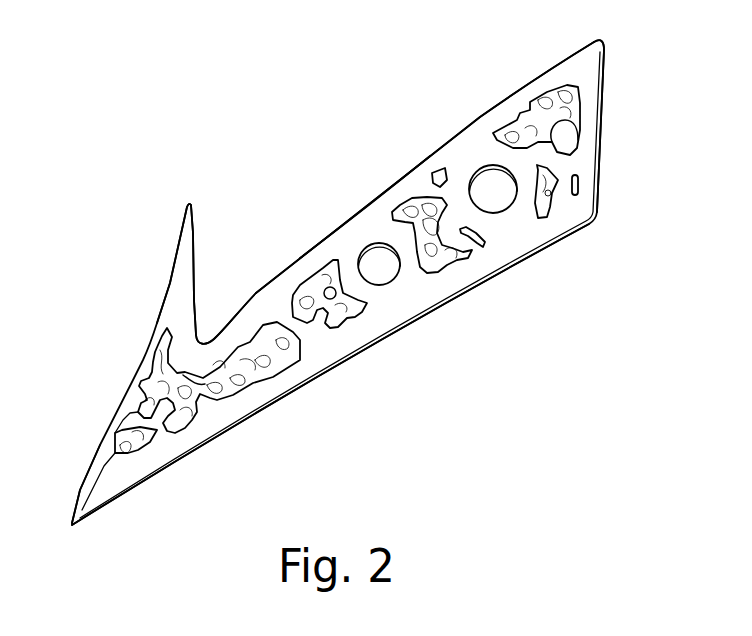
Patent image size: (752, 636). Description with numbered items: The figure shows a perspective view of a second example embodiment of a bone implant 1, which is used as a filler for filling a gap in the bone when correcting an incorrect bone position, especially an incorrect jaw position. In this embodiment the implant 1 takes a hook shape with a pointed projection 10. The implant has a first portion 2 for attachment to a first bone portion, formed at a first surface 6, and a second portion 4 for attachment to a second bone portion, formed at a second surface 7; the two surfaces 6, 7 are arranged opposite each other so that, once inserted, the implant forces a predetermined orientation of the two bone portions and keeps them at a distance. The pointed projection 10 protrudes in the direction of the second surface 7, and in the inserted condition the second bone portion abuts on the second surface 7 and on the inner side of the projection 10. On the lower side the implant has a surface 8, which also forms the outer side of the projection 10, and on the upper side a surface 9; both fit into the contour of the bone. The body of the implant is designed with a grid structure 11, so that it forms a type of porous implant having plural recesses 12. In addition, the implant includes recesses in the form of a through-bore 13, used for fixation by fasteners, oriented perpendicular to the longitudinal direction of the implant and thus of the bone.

The bone implant 1 is at (349, 282).
The first portion 2 is at (367, 352).
The second portion 4 is at (397, 177).
The first surface 6 is at (297, 400).
The second surface 7 is at (324, 232).
The lower surface 8 is at (90, 448).
The upper surface 9 is at (614, 110).
The pointed projection 10 is at (182, 308).
The grid structure 11 is at (575, 138).
The recesses 12 is at (197, 394).
The through-bore 13 is at (382, 268).